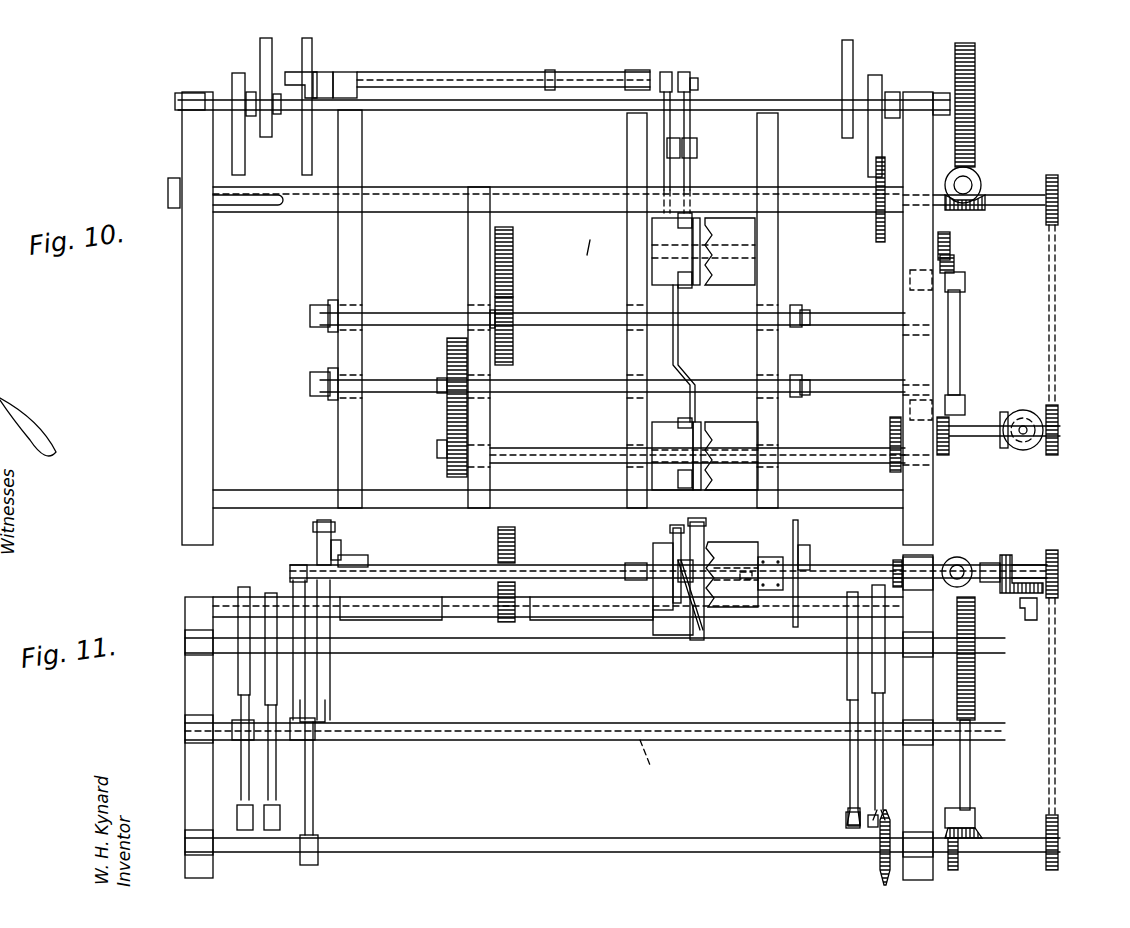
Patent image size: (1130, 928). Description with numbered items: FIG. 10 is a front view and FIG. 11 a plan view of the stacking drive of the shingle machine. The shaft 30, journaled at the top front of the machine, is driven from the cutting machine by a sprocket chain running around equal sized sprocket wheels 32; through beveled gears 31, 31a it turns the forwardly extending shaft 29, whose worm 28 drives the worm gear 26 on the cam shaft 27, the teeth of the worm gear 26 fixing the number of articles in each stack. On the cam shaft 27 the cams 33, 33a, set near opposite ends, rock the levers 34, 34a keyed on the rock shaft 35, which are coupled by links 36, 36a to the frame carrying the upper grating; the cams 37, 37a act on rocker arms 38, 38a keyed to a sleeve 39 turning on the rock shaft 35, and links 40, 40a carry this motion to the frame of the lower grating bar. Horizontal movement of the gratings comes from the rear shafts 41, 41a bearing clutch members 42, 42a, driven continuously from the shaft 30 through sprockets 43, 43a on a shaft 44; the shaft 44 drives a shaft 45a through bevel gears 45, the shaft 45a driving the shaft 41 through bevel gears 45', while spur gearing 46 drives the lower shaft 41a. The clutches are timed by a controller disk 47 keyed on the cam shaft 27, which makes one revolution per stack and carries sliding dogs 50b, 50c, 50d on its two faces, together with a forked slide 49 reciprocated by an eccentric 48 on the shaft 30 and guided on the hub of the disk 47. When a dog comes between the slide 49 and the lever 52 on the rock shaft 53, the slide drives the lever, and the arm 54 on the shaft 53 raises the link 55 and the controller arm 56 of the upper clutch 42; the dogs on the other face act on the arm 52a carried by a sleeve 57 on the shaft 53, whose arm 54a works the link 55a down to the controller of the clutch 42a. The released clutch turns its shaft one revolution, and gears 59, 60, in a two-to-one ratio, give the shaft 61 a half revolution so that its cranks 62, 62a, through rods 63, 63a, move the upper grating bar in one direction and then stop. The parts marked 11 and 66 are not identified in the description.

In FIG. 11, the frame 11 is at (1025, 620).
In FIG. 10, the worm gear 26 is at (975, 55).
In FIG. 11, the worm gear 26 is at (975, 680).
In FIG. 10, the cam shaft 27 is at (770, 118).
In FIG. 11, the cam shaft 27 is at (570, 653).
In FIG. 10, the worm 28 is at (980, 178).
In FIG. 11, the shaft 29 is at (970, 720).
In FIG. 10, the shaft 30 is at (258, 195).
In FIG. 11, the shaft 30 is at (655, 852).
In FIG. 10, the beveled gear 31 is at (975, 212).
In FIG. 11, the beveled gear 31 is at (978, 832).
In FIG. 10, the beveled gear 31a is at (950, 240).
In FIG. 11, the beveled gear 31a is at (958, 860).
In FIG. 10, the sprocket wheel 32 is at (876, 222).
In FIG. 11, the sprocket wheel 32 is at (895, 720).
In FIG. 10, the cam 33 is at (882, 80).
In FIG. 11, the cam 33 is at (880, 585).
In FIG. 10, the cam 33a is at (230, 70).
In FIG. 11, the cam 33a is at (244, 587).
In FIG. 11, the rocker lever 34 is at (883, 760).
In FIG. 11, the rocker lever 34a is at (232, 732).
In FIG. 11, the rock shaft 35 is at (656, 759).
In FIG. 11, the link 36 is at (868, 820).
In FIG. 11, the link 36a is at (243, 830).
In FIG. 10, the cam 37 is at (853, 45).
In FIG. 11, the cam 37 is at (847, 600).
In FIG. 10, the cam 37a is at (272, 38).
In FIG. 11, the cam 37a is at (270, 593).
In FIG. 11, the rocker arm 38 is at (875, 770).
In FIG. 11, the rocker arm 38a is at (313, 778).
In FIG. 11, the sleeve 39 is at (620, 723).
In FIG. 11, the link 40 is at (846, 828).
In FIG. 11, the link 40a is at (270, 830).
In FIG. 10, the shaft 41 is at (855, 260).
In FIG. 10, the shaft 41a is at (820, 448).
In FIG. 10, the clutch member 42 is at (730, 285).
In FIG. 11, the clutch member 42 is at (740, 607).
In FIG. 10, the clutch member 42a is at (740, 422).
In FIG. 10, the sprocket 43 is at (1058, 185).
In FIG. 11, the sprocket 43 is at (1058, 828).
In FIG. 10, the sprocket 43a is at (1058, 410).
In FIG. 11, the sprocket 43a is at (1058, 590).
In FIG. 10, the shaft 44 is at (1000, 440).
In FIG. 11, the shaft 44 is at (1030, 565).
In FIG. 10, the bevel gears 45 is at (968, 427).
In FIG. 10, the bevel gears 45' is at (983, 279).
In FIG. 10, the shaft 45a is at (960, 340).
In FIG. 11, the shaft 45a is at (965, 558).
In FIG. 10, the spur gearing 46 is at (890, 445).
In FIG. 10, the controller disk 47 is at (333, 80).
In FIG. 11, the eccentric 48 is at (318, 858).
In FIG. 11, the reciprocating member 49 is at (330, 690).
In FIG. 11, the sliding dog 50b is at (290, 730).
In FIG. 11, the sliding dog 50c is at (293, 585).
In FIG. 11, the sliding dog 50d is at (328, 715).
In FIG. 10, the lever 52 is at (312, 72).
In FIG. 11, the lever 52 is at (331, 528).
In FIG. 10, the arm 52a is at (357, 80).
In FIG. 11, the arm 52a is at (307, 578).
In FIG. 10, the rock shaft 53 is at (540, 72).
In FIG. 11, the rock shaft 53 is at (600, 565).
In FIG. 10, the arm 54 is at (690, 75).
In FIG. 11, the arm 54 is at (704, 525).
In FIG. 10, the arm 54a is at (666, 72).
In FIG. 11, the arm 54a is at (684, 522).
In FIG. 10, the link 55 is at (698, 84).
In FIG. 11, the link 55 is at (679, 579).
In FIG. 10, the link 55a is at (678, 140).
In FIG. 10, the controller arm 56 is at (591, 237).
In FIG. 11, the controller arm 56 is at (716, 552).
In FIG. 10, the sleeve 57 is at (595, 72).
In FIG. 11, the sleeve 57 is at (615, 565).
In FIG. 10, the gear 59 is at (513, 230).
In FIG. 11, the gear 59 is at (515, 555).
In FIG. 10, the gear 60 is at (513, 285).
In FIG. 11, the gear 60 is at (515, 535).
In FIG. 10, the shaft 61 is at (400, 313).
In FIG. 10, the crank 62 is at (330, 300).
In FIG. 11, the crank 62 is at (341, 545).
In FIG. 10, the crank 62a is at (800, 305).
In FIG. 11, the crank 62a is at (798, 550).
In FIG. 10, the rod 63 is at (312, 325).
In FIG. 11, the rod 63 is at (368, 560).
In FIG. 10, the rod 63a is at (802, 330).
In FIG. 11, the rod 63a is at (810, 560).
In FIG. 10, the bracket 66 is at (170, 182).